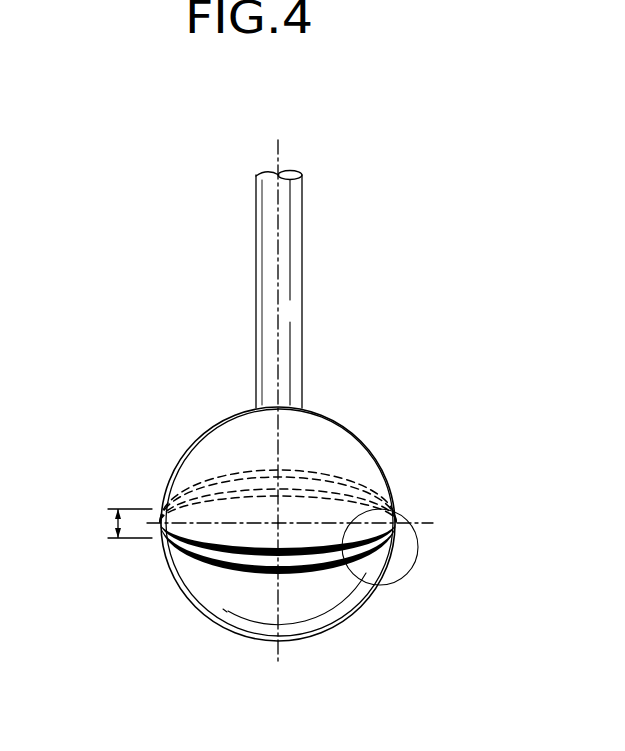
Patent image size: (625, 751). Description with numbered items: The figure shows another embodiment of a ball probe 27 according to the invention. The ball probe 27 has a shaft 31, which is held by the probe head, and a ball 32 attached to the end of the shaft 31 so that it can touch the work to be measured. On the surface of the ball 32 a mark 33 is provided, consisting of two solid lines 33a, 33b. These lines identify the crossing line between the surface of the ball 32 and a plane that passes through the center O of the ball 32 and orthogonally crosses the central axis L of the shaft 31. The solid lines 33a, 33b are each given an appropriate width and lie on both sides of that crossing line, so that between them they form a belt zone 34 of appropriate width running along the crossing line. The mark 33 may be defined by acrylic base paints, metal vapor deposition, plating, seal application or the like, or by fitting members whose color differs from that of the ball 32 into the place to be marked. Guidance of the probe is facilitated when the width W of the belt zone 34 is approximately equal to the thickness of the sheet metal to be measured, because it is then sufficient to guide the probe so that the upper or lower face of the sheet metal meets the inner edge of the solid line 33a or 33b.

The ball probe 27 is at (176, 280).
The shaft 31 is at (289, 235).
The ball 32 is at (335, 432).
The mark 33 is at (317, 582).
The solid line 33a is at (380, 509).
The solid line 33b is at (385, 585).
The belt zone 34 is at (186, 548).
The central axis L is at (278, 156).
The width of the belt zone W is at (112, 522).
The center of the ball O is at (266, 537).